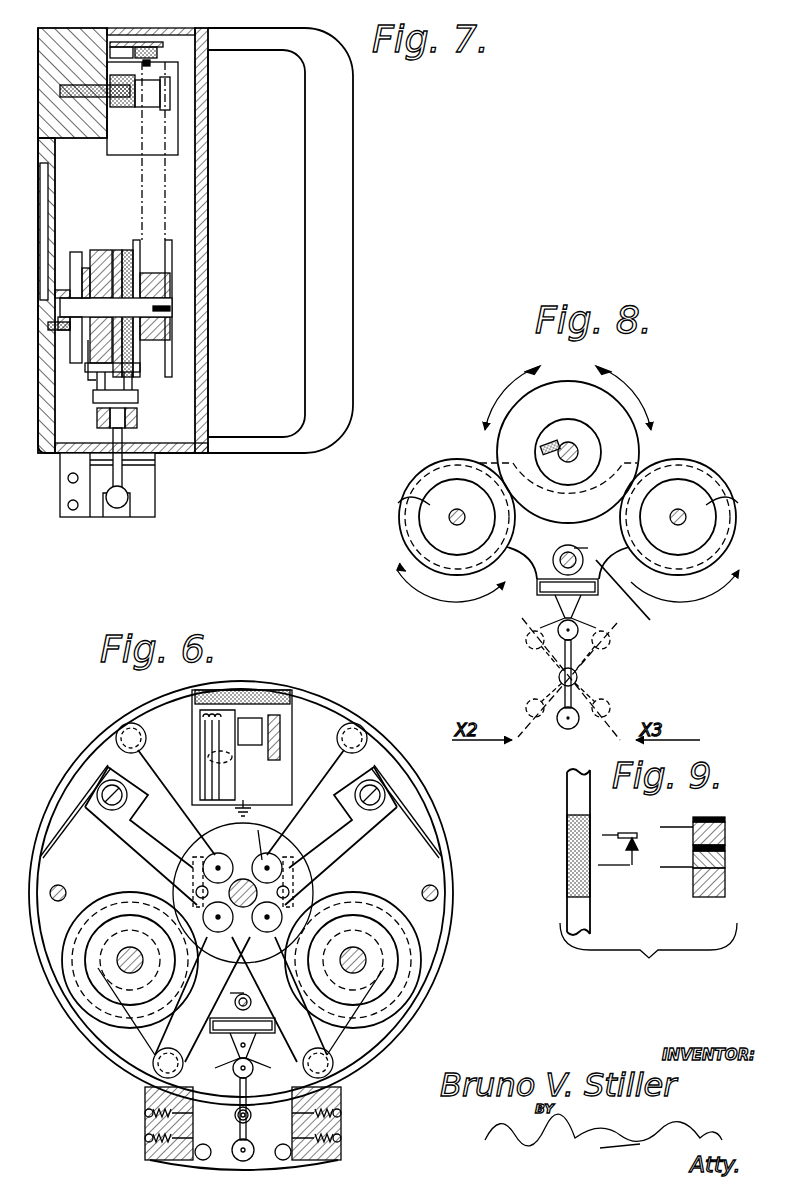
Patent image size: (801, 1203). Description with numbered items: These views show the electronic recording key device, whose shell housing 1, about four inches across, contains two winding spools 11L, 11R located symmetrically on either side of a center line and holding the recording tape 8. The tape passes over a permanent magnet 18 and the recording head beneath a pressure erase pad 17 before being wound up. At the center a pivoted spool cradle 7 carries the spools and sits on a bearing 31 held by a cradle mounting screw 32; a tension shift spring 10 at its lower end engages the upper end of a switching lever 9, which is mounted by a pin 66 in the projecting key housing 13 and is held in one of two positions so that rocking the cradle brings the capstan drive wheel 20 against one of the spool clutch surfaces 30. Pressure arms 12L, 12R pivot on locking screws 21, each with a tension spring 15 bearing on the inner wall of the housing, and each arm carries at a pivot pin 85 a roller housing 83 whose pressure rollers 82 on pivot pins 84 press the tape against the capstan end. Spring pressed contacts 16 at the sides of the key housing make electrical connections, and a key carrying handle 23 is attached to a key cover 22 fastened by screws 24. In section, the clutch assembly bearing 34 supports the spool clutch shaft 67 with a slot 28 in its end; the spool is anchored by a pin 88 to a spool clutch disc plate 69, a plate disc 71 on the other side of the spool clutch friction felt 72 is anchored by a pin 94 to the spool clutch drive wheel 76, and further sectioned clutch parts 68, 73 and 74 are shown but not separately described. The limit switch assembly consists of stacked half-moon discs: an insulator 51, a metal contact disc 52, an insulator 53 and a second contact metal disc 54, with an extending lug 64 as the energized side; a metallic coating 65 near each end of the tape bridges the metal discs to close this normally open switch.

In FIG. 6, the shell housing 1 is at (100, 726).
In FIG. 8, the pivoted spool cradle 7 is at (581, 539).
In FIG. 6, the pivoted spool cradle 7 is at (240, 992).
In FIG. 7, the recording tape 8 is at (167, 180).
In FIG. 9, the recording tape 8 is at (575, 912).
In FIG. 6, the recording tape 8 is at (302, 712).
In FIG. 7, the switching lever 9 is at (125, 512).
In FIG. 8, the switching lever 9 is at (580, 677).
In FIG. 6, the switching lever 9 is at (252, 1093).
In FIG. 8, the tension shift spring 10 is at (555, 597).
In FIG. 6, the tension shift spring 10 is at (228, 1044).
In FIG. 7, the winding spool 11L is at (172, 275).
In FIG. 6, the winding spool 11L is at (68, 945).
In FIG. 6, the winding spool 11R is at (420, 935).
In FIG. 6, the pressure arm 12L is at (145, 848).
In FIG. 6, the pressure arm 12R is at (320, 858).
In FIG. 6, the projecting key housing 13 is at (152, 1148).
In FIG. 6, the tension spring 15 is at (68, 820).
In FIG. 7, the spring pressed contacts 16 is at (68, 479).
In FIG. 6, the spring pressed contacts 16 is at (148, 1138).
In FIG. 7, the pressure erase pad 17 is at (160, 50).
In FIG. 6, the pressure erase pad 17 is at (265, 690).
In FIG. 6, the permanent magnet 18 is at (272, 740).
In FIG. 8, the capstan drive wheel 20 is at (530, 430).
In FIG. 6, the capstan drive wheel 20 is at (262, 893).
In FIG. 6, the locking screws 21 is at (108, 790).
In FIG. 7, the key cover 22 is at (208, 340).
In FIG. 7, the key carrying handle 23 is at (337, 216).
In FIG. 6, the screws 24 is at (85, 873).
In FIG. 7, the slot 28 is at (172, 306).
In FIG. 8, the spool clutch surfaces 30 is at (400, 517).
In FIG. 8, the bearing 31 is at (605, 548).
In FIG. 8, the cradle mounting screw 32 is at (576, 565).
In FIG. 7, the clutch assembly bearing 34 is at (80, 283).
In FIG. 9, the insulator 51 is at (720, 817).
In FIG. 9, the metal contact disc 52 is at (725, 830).
In FIG. 9, the insulator 53 is at (725, 847).
In FIG. 9, the second contact metal disc 54 is at (725, 858).
In FIG. 9, the extending lug 64 is at (631, 866).
In FIG. 9, the metallic coating 65 is at (566, 855).
In FIG. 6, the pin 66 is at (248, 1116).
In FIG. 7, the spool clutch shaft 67 is at (172, 296).
In FIG. 7, the clutch member 68 is at (101, 250).
In FIG. 7, the spool clutch disc plate 69 is at (128, 250).
In FIG. 7, the plate disc 71 is at (116, 250).
In FIG. 7, the spool clutch friction felt 72 is at (137, 262).
In FIG. 7, the bearing 73 is at (56, 297).
In FIG. 7, the bushing 74 is at (66, 331).
In FIG. 7, the spool clutch drive wheel 76 is at (88, 280).
In FIG. 6, the pressure rollers 82 is at (264, 855).
In FIG. 6, the roller housing 83 is at (200, 866).
In FIG. 6, the pivot pins 84 is at (266, 835).
In FIG. 6, the pivot pin 85 is at (241, 999).
In FIG. 7, the pin 88 is at (143, 353).
In FIG. 7, the pin 94 is at (108, 372).